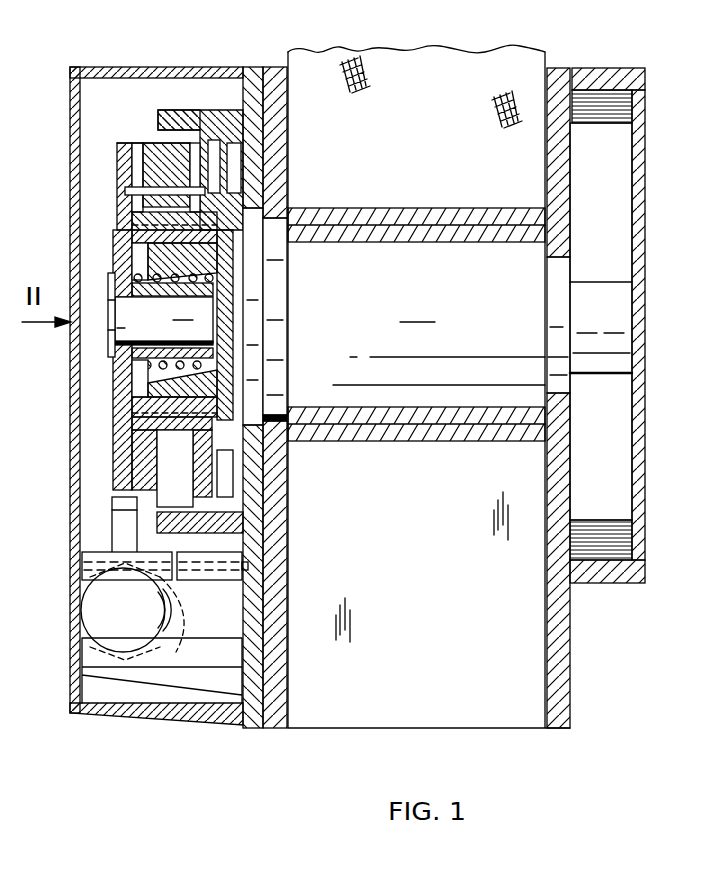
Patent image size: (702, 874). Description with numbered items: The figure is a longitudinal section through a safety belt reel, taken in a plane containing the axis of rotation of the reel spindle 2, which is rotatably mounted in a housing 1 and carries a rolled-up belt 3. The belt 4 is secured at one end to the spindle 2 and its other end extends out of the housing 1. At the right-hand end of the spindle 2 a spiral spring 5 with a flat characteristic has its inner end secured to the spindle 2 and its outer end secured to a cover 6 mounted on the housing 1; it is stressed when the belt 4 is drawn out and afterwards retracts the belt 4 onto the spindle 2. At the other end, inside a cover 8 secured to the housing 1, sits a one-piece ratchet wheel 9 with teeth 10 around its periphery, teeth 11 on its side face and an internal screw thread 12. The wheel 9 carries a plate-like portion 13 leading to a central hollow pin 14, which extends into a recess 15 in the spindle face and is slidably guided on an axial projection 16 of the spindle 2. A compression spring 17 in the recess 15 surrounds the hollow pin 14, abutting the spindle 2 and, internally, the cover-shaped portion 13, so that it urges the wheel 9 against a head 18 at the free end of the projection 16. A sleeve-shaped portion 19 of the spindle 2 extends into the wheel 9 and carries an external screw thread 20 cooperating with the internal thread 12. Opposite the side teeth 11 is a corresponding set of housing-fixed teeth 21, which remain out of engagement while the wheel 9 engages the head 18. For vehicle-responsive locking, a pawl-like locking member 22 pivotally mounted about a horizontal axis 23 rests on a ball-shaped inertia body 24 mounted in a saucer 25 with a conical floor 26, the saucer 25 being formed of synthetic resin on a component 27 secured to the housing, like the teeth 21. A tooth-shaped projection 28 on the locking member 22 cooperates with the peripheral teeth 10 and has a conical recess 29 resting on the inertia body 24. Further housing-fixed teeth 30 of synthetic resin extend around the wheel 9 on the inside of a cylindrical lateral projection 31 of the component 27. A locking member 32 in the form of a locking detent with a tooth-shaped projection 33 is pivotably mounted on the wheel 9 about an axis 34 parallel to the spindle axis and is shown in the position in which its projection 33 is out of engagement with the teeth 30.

The housing 1 is at (330, 726).
The reel spindle 2 is at (460, 273).
The rolled-up belt 3 is at (446, 442).
The belt 4 is at (396, 66).
The spiral spring 5 is at (618, 218).
The cover 6 is at (599, 84).
The cover 8 is at (162, 714).
The ratchet wheel 9 is at (124, 410).
The teeth 10 is at (122, 142).
The teeth 11 is at (212, 148).
The internal screw thread 12 is at (138, 220).
The plate-like portion 13 is at (126, 256).
The hollow pin 14 is at (160, 295).
The recess 15 is at (186, 266).
The axial projection 16 is at (204, 312).
The compression spring 17 is at (202, 358).
The head 18 is at (110, 328).
The sleeve-shaped portion 19 is at (182, 392).
The external screw thread 20 is at (222, 402).
The teeth 21 is at (232, 175).
The pawl-like locking member 22 is at (122, 531).
The horizontal axis 23 is at (100, 565).
The inertia body 24 is at (100, 604).
The saucer 25 is at (132, 676).
The conical floor 26 is at (174, 640).
The component 27 is at (246, 682).
The tooth-shaped projection 28 is at (120, 502).
The conical recess 29 is at (168, 588).
The teeth 30 is at (158, 160).
The cylindrical lateral projection 31 is at (183, 120).
The locking member 32 is at (150, 143).
The tooth-shaped projection 33 is at (142, 142).
The axis 34 is at (126, 189).